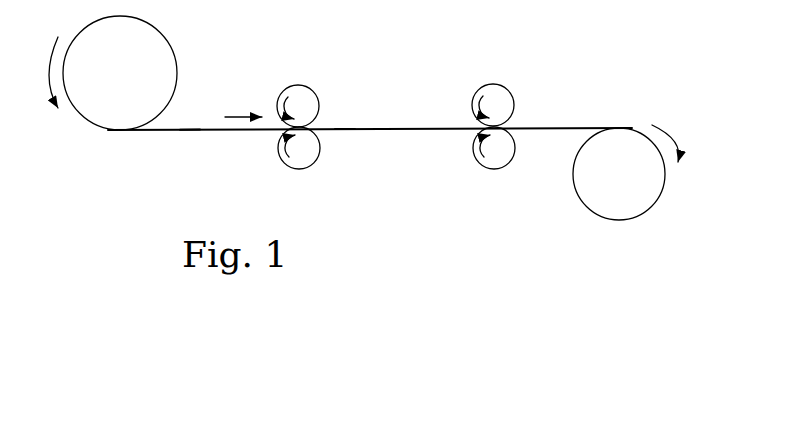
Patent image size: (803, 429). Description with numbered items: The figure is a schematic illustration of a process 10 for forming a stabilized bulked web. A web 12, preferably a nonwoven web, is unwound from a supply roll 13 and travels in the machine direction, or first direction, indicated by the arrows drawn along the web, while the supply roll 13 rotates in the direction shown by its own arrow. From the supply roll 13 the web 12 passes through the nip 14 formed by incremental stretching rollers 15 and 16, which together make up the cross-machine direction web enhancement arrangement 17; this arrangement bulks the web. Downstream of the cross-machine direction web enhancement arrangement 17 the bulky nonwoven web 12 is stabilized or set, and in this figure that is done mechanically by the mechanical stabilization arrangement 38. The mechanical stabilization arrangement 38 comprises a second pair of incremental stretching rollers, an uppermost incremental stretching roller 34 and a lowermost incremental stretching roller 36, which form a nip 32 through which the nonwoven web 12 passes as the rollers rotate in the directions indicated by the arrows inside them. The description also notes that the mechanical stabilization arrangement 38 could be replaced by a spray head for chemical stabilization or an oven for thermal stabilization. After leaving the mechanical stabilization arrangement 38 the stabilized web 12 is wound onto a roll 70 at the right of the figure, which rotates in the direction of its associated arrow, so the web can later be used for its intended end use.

The process for forming a stabilized bulked web 10 is at (406, 90).
The web 12 is at (177, 140).
The supply roll 13 is at (158, 28).
The nip 14 is at (271, 135).
The incremental stretching roller 15 is at (312, 88).
The incremental stretching roller 16 is at (296, 170).
The cross-machine direction web enhancement arrangement 17 is at (267, 74).
The nip 32 is at (471, 134).
The incremental stretching roller 34 is at (512, 88).
The incremental stretching roller 36 is at (492, 170).
The mechanical stabilization arrangement 38 is at (540, 103).
The take-up roll 70 is at (610, 220).